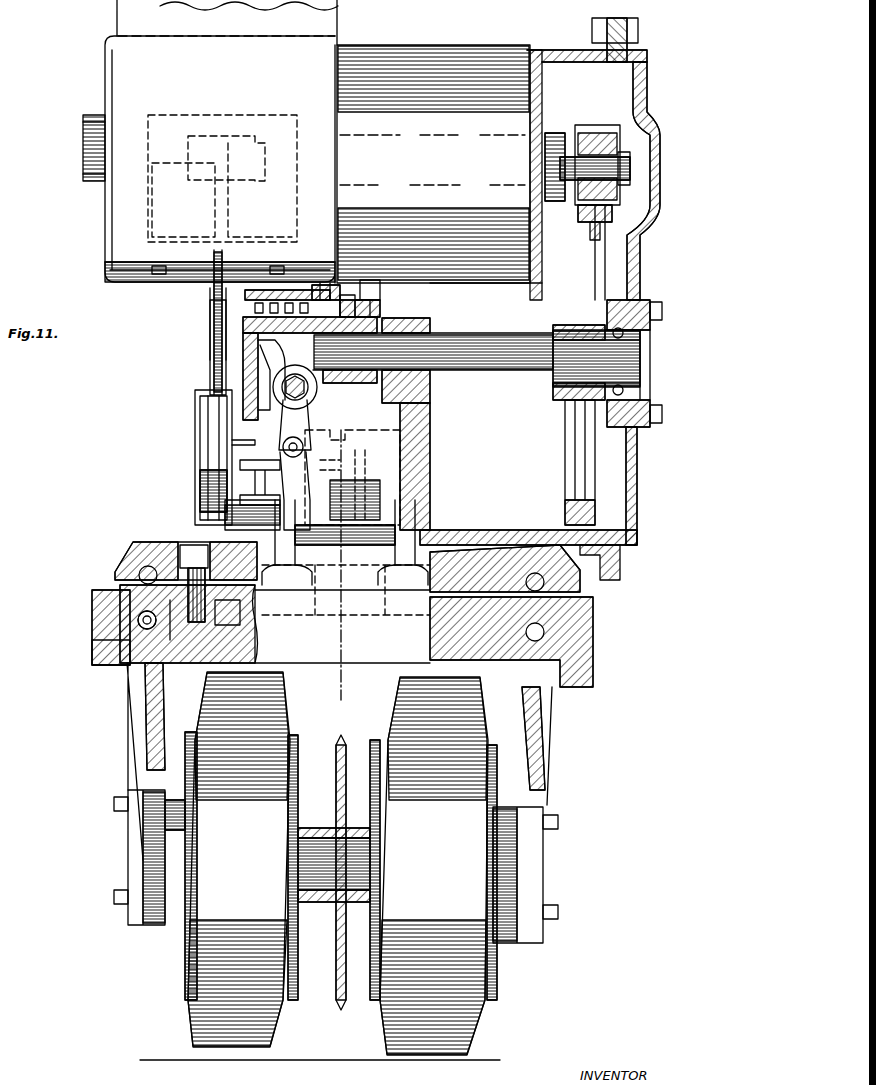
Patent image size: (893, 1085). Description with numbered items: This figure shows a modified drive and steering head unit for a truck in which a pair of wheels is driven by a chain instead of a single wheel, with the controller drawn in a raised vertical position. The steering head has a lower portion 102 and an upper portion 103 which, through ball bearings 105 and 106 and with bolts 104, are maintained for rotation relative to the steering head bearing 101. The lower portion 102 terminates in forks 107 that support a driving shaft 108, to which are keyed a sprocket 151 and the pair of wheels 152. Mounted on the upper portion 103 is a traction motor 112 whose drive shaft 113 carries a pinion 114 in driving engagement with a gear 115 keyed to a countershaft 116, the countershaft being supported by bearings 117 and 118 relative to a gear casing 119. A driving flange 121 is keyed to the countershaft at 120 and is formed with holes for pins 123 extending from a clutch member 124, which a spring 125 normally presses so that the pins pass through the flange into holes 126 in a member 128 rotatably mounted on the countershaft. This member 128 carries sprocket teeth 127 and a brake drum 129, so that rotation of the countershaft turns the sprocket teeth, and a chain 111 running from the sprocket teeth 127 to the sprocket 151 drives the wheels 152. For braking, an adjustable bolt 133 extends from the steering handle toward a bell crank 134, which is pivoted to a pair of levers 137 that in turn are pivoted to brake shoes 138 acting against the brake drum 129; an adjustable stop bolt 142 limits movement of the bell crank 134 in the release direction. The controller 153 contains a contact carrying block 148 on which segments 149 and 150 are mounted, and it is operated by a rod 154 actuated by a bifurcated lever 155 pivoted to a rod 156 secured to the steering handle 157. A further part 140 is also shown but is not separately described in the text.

The steering head bearing 101 is at (95, 605).
The lower portion of the steering head 102 is at (125, 632).
The upper portion of the steering head 103 is at (135, 548).
The bolts 104 is at (205, 612).
The ball bearing 105 is at (185, 560).
The ball bearing 106 is at (140, 615).
The forks 107 is at (145, 735).
The driving shaft 108 is at (334, 865).
The chain 111 is at (338, 688).
The traction motor 112 is at (439, 172).
The drive shaft 113 is at (635, 170).
The pinion 114 is at (585, 125).
The gear 115 is at (608, 240).
The countershaft 116 is at (644, 358).
The bearing 117 is at (652, 333).
The bearing 118 is at (432, 322).
The gear casing 119 is at (628, 452).
The key 120 is at (243, 352).
The driving flange 121 is at (322, 283).
The pins 123 is at (330, 285).
The clutch member 124 is at (208, 329).
The spring 125 is at (253, 302).
The holes 126 is at (345, 295).
The sprocket teeth 127 is at (372, 300).
The member 128 is at (425, 385).
The brake drum 129 is at (243, 289).
The adjustable bolt 133 is at (273, 383).
The bell crank 134 is at (275, 463).
The levers 137 is at (280, 523).
The brake shoes 138 is at (255, 422).
The contact spring 140 is at (362, 300).
The adjustable stop bolt 142 is at (283, 431).
The contact carrying block 148 is at (219, 116).
The segment 149 is at (170, 163).
The segment 150 is at (263, 143).
The sprocket 151 is at (347, 745).
The pair of wheels 152 is at (336, 863).
The controller 153 is at (118, 78).
The rod 154 is at (210, 312).
The bifurcated lever 155 is at (200, 462).
The rod 156 is at (240, 510).
The steering handle 157 is at (402, 453).